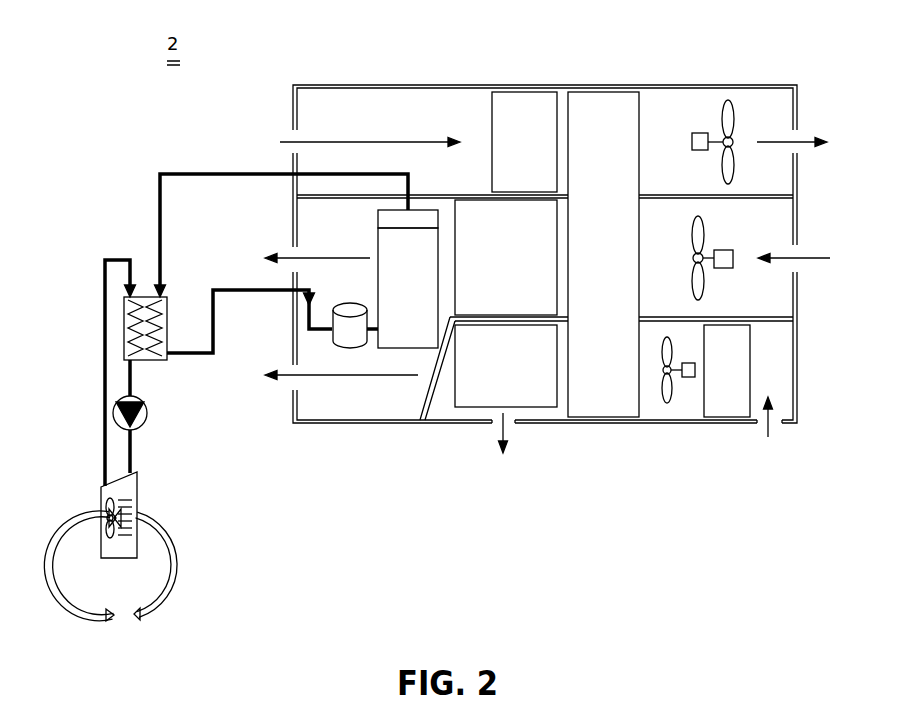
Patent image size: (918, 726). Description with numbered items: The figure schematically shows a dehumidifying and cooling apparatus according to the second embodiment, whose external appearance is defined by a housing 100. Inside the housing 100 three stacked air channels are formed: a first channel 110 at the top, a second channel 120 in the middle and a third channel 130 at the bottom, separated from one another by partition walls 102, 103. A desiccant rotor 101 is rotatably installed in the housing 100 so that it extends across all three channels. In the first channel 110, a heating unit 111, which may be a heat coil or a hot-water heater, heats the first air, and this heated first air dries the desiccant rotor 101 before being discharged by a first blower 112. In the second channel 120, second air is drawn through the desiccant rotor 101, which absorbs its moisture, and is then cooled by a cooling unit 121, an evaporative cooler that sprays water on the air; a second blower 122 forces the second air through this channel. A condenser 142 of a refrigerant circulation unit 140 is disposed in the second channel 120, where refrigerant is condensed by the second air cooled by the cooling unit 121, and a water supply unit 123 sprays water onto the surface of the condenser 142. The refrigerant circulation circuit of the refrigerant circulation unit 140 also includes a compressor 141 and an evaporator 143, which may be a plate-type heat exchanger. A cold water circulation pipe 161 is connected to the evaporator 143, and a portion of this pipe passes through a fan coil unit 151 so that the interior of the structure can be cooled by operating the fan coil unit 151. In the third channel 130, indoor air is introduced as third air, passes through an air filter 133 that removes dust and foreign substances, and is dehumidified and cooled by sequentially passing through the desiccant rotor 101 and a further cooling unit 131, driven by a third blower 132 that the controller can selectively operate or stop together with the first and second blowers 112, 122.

The housing 100 is at (677, 72).
The desiccant rotor 101 is at (610, 97).
The partition wall 102 is at (762, 195).
The partition wall 103 is at (762, 318).
The first channel 110 is at (367, 100).
The heating unit 111 is at (525, 97).
The first blower 112 is at (727, 100).
The second channel 120 is at (773, 211).
The cooling unit 121 is at (480, 205).
The second blower 122 is at (700, 283).
The water supply unit 123 is at (378, 224).
The third channel 130 is at (773, 350).
The cooling unit 131 is at (530, 403).
The third blower 132 is at (667, 403).
The air filter 133 is at (730, 417).
The refrigerant circulation unit 140 is at (189, 158).
The compressor 141 is at (331, 338).
The condenser 142 is at (402, 348).
The evaporator 143 is at (157, 360).
The fan coil unit 151 is at (152, 478).
The cold water circulation pipe 161 is at (105, 373).